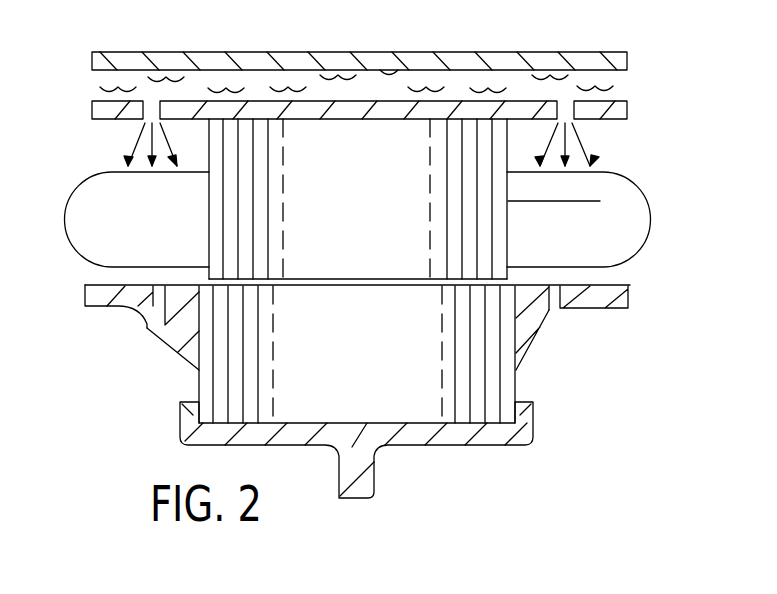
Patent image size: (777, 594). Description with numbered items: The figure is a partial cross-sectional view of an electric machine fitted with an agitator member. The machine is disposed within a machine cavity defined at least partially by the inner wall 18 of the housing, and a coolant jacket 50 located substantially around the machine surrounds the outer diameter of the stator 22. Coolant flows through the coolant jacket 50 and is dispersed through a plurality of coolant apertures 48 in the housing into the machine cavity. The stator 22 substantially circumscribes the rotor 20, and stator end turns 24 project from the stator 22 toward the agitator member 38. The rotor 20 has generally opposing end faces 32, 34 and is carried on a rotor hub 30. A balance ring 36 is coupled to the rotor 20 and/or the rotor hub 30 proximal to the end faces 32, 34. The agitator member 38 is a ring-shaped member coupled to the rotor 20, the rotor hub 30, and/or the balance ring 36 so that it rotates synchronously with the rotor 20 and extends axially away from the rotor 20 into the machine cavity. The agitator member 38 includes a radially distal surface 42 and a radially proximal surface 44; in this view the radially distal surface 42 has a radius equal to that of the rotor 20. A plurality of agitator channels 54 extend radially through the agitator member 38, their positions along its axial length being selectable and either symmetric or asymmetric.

The inner wall 18 is at (423, 107).
The coolant jacket 50 is at (523, 89).
The coolant apertures 48 is at (152, 112).
The stator 22 is at (600, 201).
The stator end turns 24 is at (77, 222).
The rotor 20 is at (462, 407).
The radially distal surface 42 is at (615, 284).
The agitator member 38 is at (97, 292).
The balance ring 36 is at (180, 346).
The agitator channels 54 is at (157, 311).
The radially proximal surface 44 is at (562, 302).
The end face 32 is at (198, 383).
The end face 34 is at (519, 385).
The rotor hub 30 is at (360, 449).